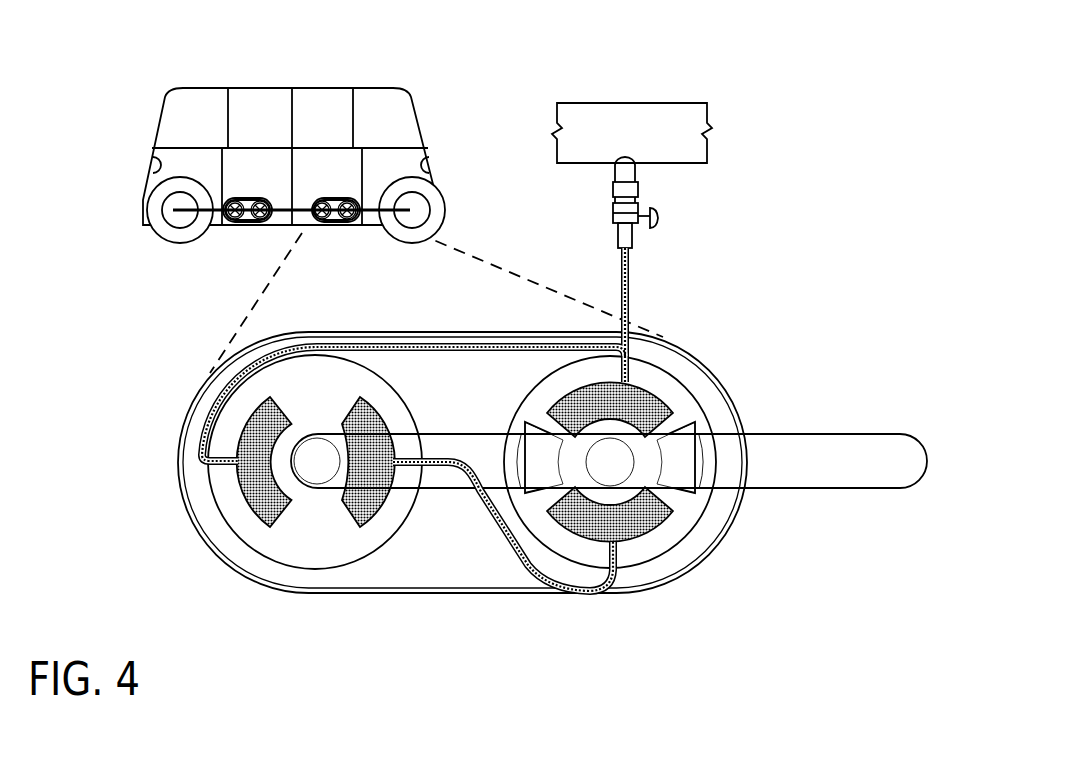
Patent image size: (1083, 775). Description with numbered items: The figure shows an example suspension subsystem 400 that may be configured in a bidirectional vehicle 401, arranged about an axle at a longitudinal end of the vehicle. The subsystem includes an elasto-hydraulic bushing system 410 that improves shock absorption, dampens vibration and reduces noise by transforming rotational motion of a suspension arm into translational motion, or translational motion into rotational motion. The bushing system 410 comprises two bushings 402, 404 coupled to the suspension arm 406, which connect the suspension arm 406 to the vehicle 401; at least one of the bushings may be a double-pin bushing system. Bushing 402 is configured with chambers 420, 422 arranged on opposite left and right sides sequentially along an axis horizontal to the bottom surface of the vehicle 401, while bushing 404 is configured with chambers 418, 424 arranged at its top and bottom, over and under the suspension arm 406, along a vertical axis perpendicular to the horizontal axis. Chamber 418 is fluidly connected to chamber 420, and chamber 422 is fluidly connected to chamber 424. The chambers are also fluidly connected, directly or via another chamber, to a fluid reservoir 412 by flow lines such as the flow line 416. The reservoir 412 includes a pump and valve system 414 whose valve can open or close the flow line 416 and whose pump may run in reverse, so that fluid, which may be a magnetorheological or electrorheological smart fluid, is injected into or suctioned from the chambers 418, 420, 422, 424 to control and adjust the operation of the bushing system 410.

The suspension subsystem 400 is at (114, 68).
The bidirectional vehicle 401 is at (320, 88).
The bushing 402 is at (260, 602).
The bushing 404 is at (633, 609).
The suspension arm 406 is at (786, 479).
The elasto-hydraulic bushing system 410 is at (188, 416).
The fluid reservoir 412 is at (633, 103).
The pump and valve system 414 is at (612, 217).
The flow line 416 is at (630, 300).
The chamber 418 is at (658, 410).
The chamber 420 is at (250, 478).
The chamber 422 is at (370, 505).
The chamber 424 is at (650, 508).